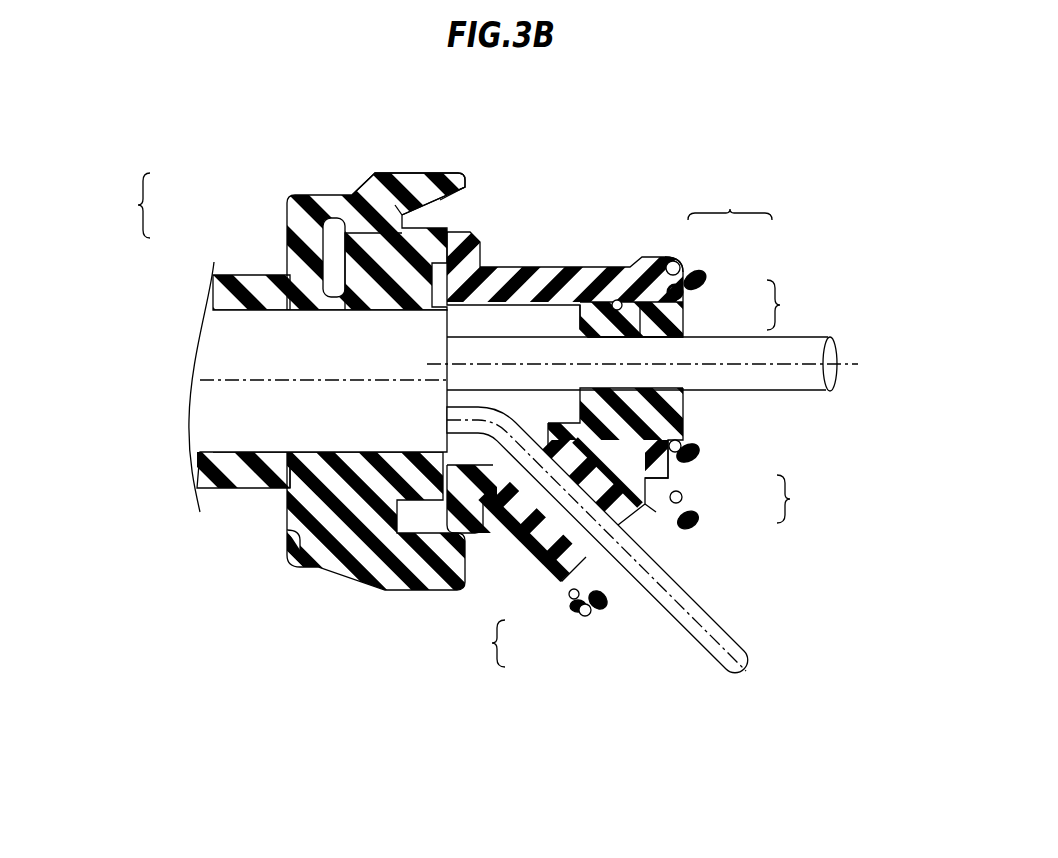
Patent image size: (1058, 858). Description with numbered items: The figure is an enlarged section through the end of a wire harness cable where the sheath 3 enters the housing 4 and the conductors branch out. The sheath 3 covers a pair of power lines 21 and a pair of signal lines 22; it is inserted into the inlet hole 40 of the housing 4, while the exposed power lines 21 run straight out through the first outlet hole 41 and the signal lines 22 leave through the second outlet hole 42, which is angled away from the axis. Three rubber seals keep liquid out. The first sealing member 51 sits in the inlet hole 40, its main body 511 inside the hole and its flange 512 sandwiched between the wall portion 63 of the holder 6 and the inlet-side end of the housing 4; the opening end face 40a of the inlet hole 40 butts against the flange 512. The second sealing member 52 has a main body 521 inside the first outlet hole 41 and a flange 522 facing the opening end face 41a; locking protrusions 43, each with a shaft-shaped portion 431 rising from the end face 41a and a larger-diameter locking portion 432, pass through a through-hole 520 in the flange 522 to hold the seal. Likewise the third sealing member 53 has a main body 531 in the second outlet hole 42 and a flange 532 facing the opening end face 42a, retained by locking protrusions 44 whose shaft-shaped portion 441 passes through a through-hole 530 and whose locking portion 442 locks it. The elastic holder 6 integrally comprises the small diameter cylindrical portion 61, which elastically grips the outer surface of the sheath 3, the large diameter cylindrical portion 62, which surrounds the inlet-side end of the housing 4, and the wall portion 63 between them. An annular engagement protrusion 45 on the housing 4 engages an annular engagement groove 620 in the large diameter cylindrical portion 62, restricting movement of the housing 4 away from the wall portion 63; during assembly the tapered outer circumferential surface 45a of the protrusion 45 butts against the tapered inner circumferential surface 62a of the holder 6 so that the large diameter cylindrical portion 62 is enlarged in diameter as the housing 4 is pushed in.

The sheath 3 is at (205, 396).
The housing 4 is at (553, 257).
The holder 6 is at (298, 580).
The power lines 21 is at (812, 337).
The signal lines 22 is at (727, 630).
The inlet hole 40 is at (357, 490).
The opening end face 40a is at (343, 520).
The first outlet hole 41 is at (617, 300).
The opening end face 41a is at (673, 262).
The second outlet hole 42 is at (530, 528).
The opening end face 42a is at (656, 512).
The locking protrusion 43 is at (703, 453).
The shaft-shaped portion 431 is at (682, 266).
The locking portion 432 is at (700, 272).
The locking protrusion 44 is at (602, 607).
The shaft-shaped portion 441 is at (683, 498).
The locking portion 442 is at (699, 522).
The engagement protrusion 45 is at (373, 230).
The tapered outer circumferential surface 45a is at (336, 222).
The first sealing member 51 is at (130, 205).
The main body 511 is at (330, 278).
The flange 512 is at (322, 248).
The second sealing member 52 is at (788, 305).
The through-hole 520 is at (690, 447).
The main body 521 is at (655, 317).
The flange 522 is at (683, 293).
The third sealing member 53 is at (484, 643).
The through-hole 530 is at (586, 616).
The main body 531 is at (572, 597).
The flange 532 is at (574, 608).
The small diameter cylindrical portion 61 is at (247, 477).
The large diameter cylindrical portion 62 is at (390, 173).
The engagement groove 620 is at (400, 212).
The tapered inner circumferential surface 62a is at (452, 200).
The wall portion 63 is at (297, 227).